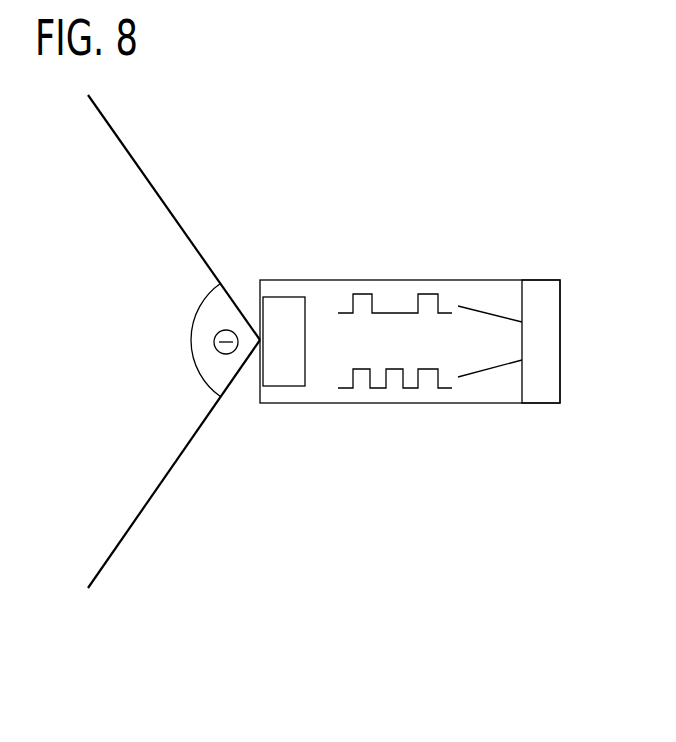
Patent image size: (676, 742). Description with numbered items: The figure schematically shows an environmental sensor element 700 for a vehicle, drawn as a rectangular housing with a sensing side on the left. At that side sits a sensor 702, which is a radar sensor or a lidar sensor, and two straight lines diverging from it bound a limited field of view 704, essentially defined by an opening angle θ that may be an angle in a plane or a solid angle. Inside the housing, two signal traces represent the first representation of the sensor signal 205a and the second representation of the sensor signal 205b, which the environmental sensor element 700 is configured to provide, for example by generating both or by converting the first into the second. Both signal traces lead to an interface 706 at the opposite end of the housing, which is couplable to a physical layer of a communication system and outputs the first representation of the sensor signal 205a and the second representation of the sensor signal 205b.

The environmental sensor element 700 is at (495, 403).
The sensor 702 is at (280, 297).
The field of view 704 is at (124, 379).
The interface 706 is at (548, 340).
The first representation of the sensor signal 205a is at (423, 293).
The second representation of the sensor signal 205b is at (375, 403).